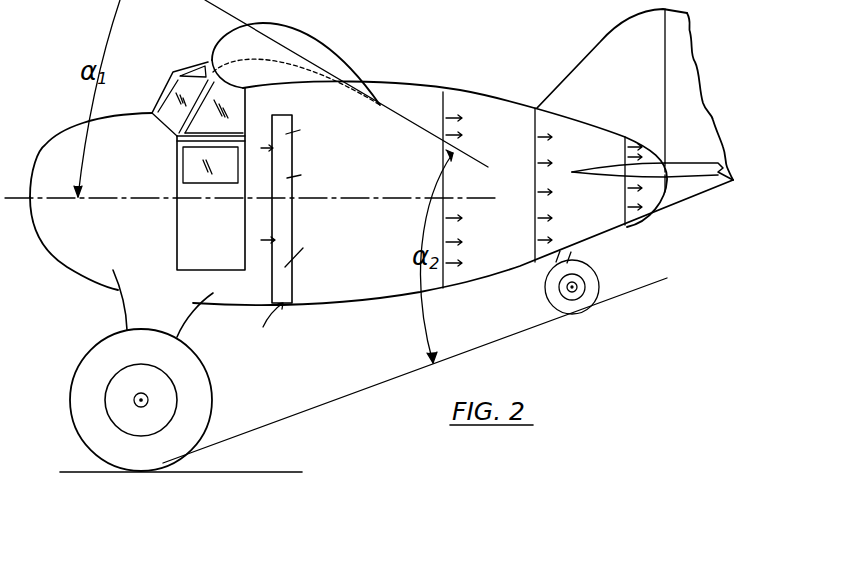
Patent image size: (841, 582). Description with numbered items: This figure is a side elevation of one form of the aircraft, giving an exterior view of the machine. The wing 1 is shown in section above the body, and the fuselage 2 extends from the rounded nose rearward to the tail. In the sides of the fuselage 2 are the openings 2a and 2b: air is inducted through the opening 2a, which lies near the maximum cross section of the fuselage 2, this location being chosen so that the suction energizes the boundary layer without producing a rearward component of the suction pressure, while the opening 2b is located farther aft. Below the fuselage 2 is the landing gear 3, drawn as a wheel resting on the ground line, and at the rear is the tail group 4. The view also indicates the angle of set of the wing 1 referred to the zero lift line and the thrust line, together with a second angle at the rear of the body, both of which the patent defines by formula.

The wing 1 is at (327, 47).
The fuselage 2 is at (328, 307).
The opening 2a is at (287, 233).
The opening 2b is at (535, 147).
The landing gear 3 is at (195, 382).
The tail group 4 is at (665, 85).